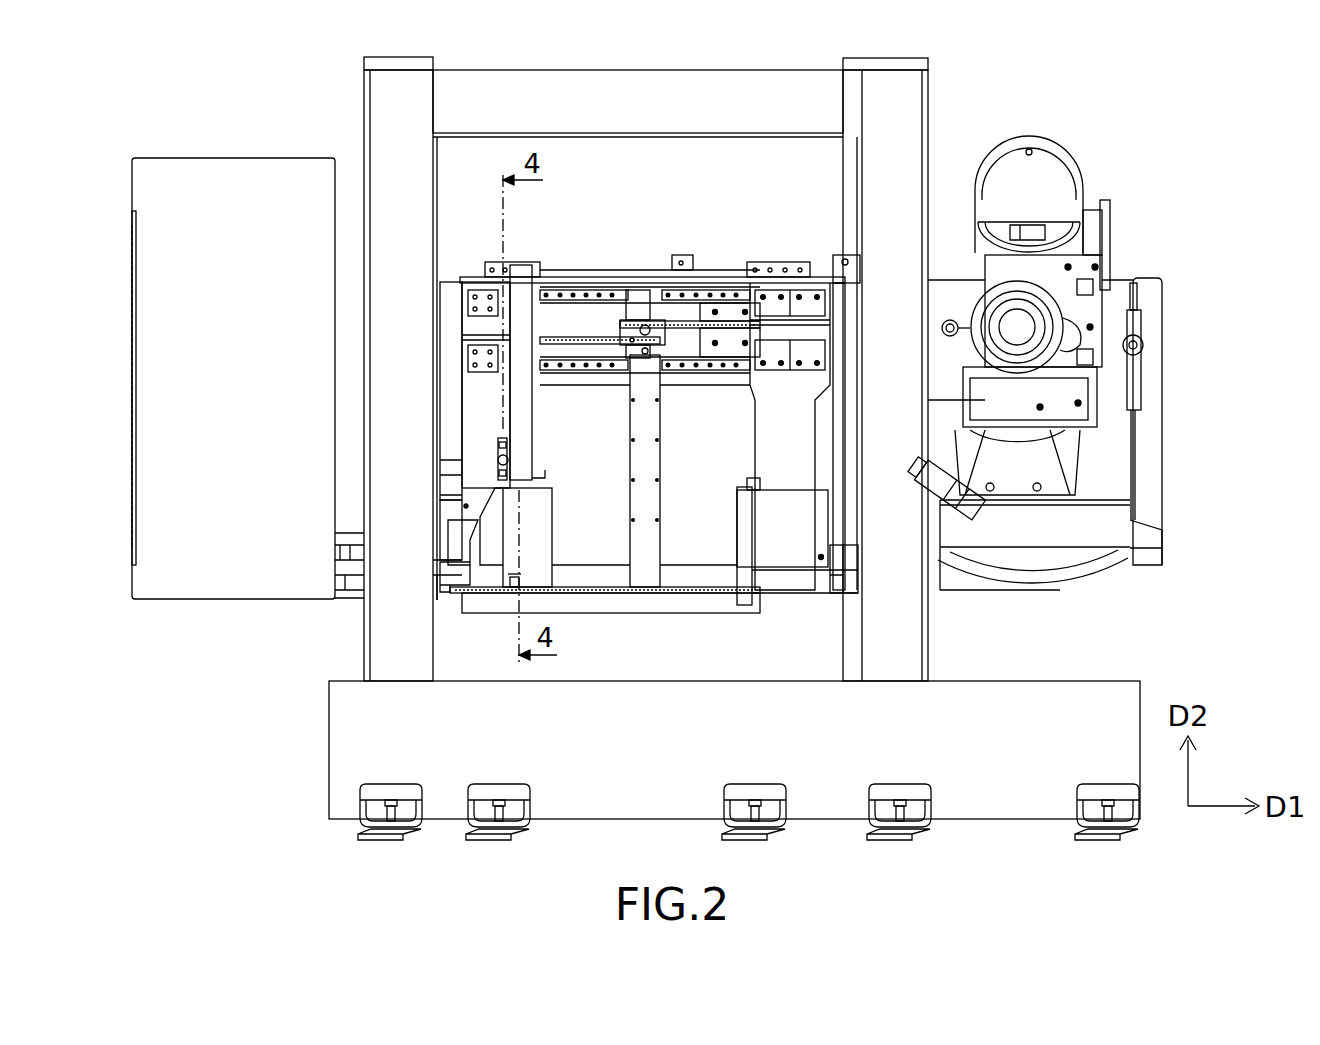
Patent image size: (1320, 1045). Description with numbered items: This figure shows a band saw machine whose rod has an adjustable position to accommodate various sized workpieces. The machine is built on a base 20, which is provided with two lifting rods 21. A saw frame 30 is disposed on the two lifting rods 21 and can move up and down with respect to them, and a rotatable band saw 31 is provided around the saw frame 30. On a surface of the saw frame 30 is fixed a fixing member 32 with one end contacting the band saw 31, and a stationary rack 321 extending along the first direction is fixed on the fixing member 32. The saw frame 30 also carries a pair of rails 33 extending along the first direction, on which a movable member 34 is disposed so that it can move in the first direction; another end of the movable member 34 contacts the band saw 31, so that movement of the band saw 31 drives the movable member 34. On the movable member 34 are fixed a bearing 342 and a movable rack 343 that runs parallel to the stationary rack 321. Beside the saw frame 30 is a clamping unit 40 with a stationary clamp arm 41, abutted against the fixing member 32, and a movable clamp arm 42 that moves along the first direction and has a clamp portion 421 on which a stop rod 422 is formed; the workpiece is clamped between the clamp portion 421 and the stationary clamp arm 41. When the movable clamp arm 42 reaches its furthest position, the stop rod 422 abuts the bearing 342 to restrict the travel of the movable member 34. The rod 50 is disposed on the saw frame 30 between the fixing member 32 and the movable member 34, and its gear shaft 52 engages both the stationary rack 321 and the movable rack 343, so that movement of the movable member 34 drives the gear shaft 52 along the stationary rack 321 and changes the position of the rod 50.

The base 20 is at (328, 770).
The lifting rods 21 is at (383, 130).
The saw frame 30 is at (1152, 275).
The band saw 31 is at (966, 580).
The fixing member 32 is at (808, 440).
The stationary rack 321 is at (681, 325).
The rails 33 is at (577, 297).
The movable member 34 is at (467, 320).
The bearing 342 is at (495, 455).
The movable rack 343 is at (551, 335).
The clamping unit 40 is at (649, 630).
The stationary clamp arm 41 is at (742, 546).
The movable clamp arm 42 is at (555, 553).
The clamp portion 421 is at (537, 520).
The stop rod 422 is at (527, 435).
The rod 50 is at (647, 478).
The gear shaft 52 is at (646, 320).